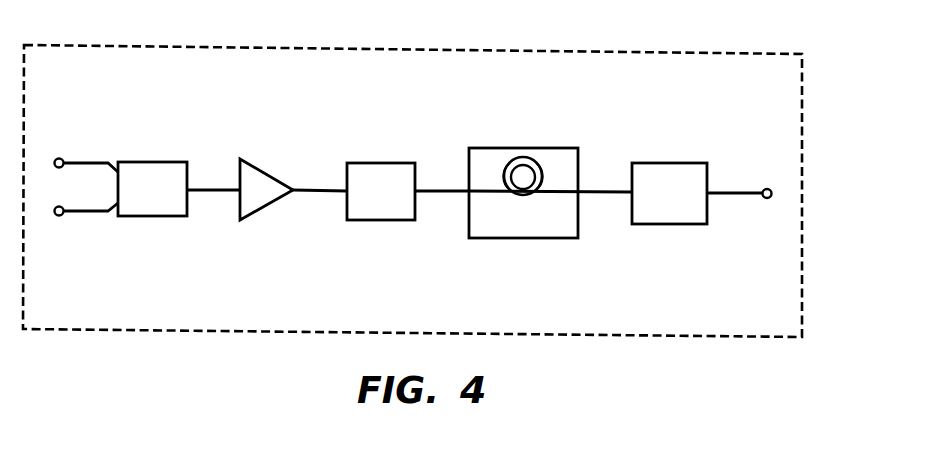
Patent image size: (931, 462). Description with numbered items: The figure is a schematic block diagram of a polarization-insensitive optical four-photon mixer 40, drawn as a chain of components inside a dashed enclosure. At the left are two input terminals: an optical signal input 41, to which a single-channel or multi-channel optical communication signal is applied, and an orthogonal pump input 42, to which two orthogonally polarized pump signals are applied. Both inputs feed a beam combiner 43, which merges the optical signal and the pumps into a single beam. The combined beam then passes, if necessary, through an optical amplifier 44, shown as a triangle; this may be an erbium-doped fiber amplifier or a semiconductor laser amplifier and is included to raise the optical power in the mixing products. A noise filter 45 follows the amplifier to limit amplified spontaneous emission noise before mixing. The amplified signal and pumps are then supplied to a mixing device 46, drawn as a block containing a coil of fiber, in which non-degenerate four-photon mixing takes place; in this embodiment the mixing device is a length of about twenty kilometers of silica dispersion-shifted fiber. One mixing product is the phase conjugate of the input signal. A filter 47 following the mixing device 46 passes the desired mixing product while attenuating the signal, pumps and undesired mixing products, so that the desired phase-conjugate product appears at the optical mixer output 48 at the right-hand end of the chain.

The polarization-insensitive optical four-photon mixer 40 is at (413, 50).
The optical signal input 41 is at (79, 218).
The orthogonal pump input 42 is at (82, 162).
The beam combiner 43 is at (158, 162).
The optical amplifier 44 is at (268, 173).
The noise filter 45 is at (388, 163).
The mixing device 46 is at (528, 148).
The filter 47 is at (672, 163).
The optical mixer output 48 is at (745, 193).